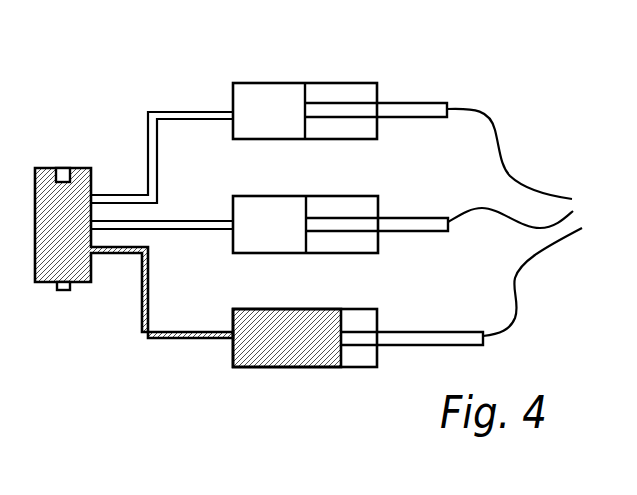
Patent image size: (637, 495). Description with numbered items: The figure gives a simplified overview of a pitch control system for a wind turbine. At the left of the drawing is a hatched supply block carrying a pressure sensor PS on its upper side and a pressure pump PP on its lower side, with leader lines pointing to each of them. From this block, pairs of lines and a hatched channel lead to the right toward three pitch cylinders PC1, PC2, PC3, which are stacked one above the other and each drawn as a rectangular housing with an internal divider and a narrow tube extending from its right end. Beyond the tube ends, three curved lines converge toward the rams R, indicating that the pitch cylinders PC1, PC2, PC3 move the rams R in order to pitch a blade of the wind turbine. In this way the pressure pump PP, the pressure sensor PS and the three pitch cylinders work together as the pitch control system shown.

The pressure sensor PS is at (63, 168).
The pressure pump PP is at (62, 290).
The pitch cylinder PC1 is at (343, 83).
The pitch cylinder PC2 is at (343, 196).
The pitch cylinder PC3 is at (352, 309).
The rams R is at (524, 222).